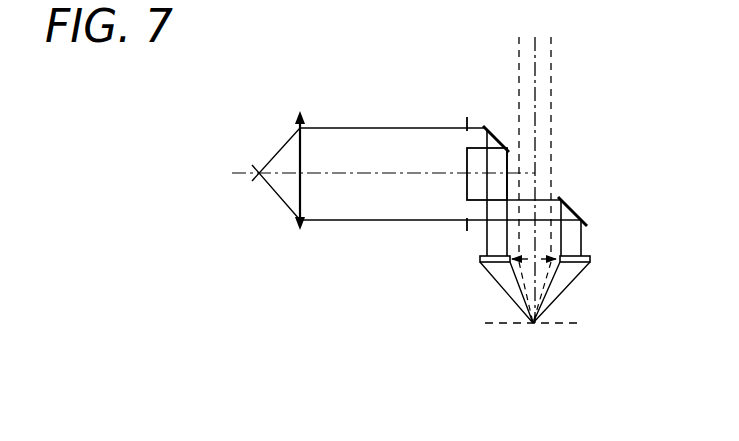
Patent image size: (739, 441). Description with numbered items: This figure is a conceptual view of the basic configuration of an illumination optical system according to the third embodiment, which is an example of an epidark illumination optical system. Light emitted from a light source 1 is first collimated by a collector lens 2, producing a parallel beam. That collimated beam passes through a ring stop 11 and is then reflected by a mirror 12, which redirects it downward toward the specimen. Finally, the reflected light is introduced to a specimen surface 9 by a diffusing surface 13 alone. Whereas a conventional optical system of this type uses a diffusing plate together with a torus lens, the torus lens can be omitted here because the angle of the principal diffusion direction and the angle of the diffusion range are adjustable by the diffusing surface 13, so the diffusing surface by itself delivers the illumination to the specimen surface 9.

The light source 1 is at (259, 170).
The collector lens 2 is at (297, 119).
The specimen surface 9 is at (576, 322).
The ring stop 11 is at (465, 118).
The mirror 12 is at (498, 131).
The diffusing surface 13 is at (590, 257).